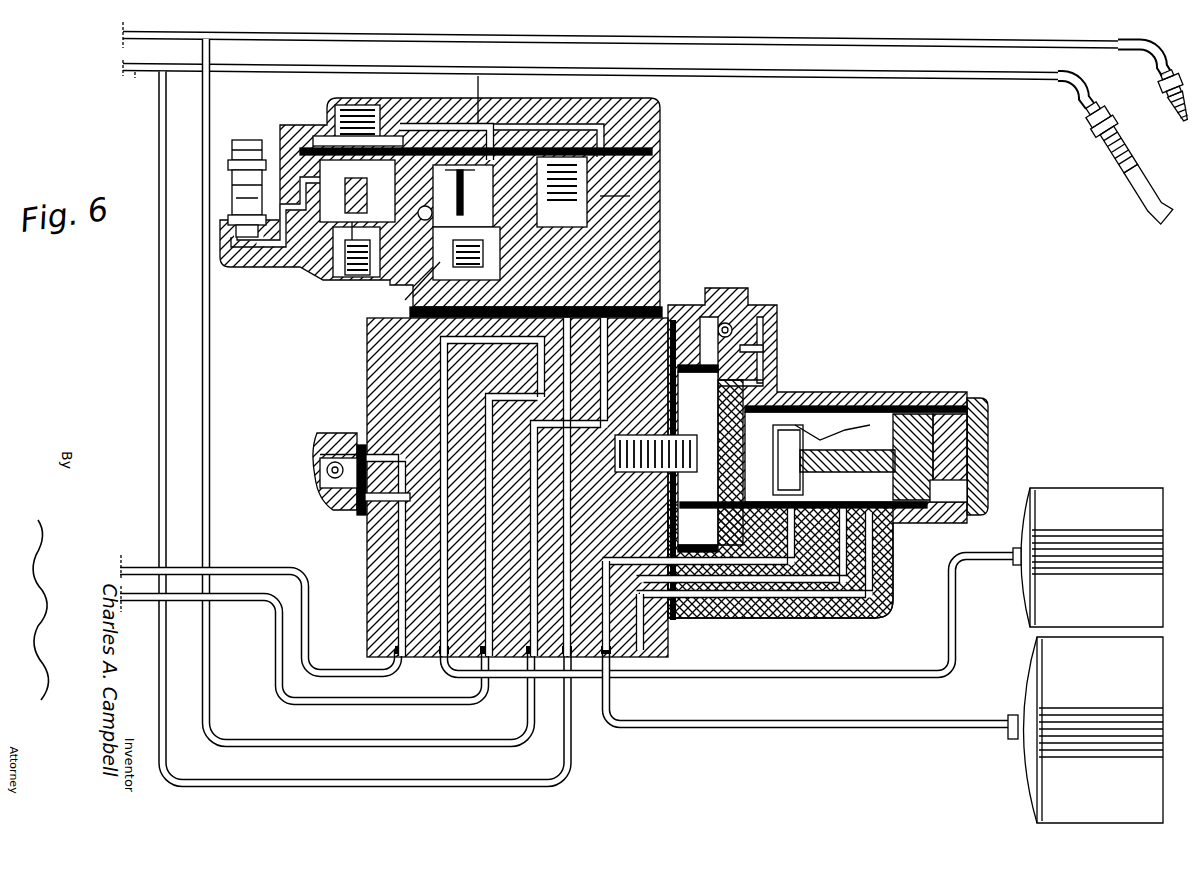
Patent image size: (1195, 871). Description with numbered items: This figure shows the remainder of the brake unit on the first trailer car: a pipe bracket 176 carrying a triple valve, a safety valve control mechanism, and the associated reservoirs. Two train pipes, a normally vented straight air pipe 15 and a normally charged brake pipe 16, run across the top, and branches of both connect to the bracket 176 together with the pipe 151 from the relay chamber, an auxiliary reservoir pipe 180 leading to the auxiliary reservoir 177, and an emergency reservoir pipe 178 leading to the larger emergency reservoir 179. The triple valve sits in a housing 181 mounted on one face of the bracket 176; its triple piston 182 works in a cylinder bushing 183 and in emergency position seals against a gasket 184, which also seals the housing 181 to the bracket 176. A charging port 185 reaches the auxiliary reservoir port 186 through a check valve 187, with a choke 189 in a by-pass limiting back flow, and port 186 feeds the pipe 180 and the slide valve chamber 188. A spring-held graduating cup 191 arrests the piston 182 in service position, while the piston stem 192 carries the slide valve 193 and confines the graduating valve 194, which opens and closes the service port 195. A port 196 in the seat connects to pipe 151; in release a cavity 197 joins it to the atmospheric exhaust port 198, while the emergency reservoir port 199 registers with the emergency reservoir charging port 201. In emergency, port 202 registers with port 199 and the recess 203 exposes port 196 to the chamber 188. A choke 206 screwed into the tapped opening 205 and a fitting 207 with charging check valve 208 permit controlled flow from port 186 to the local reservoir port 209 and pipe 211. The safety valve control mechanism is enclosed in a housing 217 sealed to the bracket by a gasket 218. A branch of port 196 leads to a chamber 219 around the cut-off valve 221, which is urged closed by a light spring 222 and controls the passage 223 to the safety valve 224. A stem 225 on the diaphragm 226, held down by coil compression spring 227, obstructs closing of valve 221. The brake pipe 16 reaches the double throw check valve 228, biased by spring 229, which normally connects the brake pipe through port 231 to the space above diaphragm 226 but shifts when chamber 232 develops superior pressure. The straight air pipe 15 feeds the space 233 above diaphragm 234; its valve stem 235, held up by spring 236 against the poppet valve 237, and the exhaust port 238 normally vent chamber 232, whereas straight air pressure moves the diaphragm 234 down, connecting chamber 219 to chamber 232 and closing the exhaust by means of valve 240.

The straight air pipe 15 is at (165, 26).
The brake pipe 16 is at (136, 73).
The pipe 151 is at (129, 601).
The pipe bracket 176 is at (367, 388).
The auxiliary reservoir 177 is at (1079, 488).
The emergency reservoir pipe 178 is at (718, 727).
The emergency reservoir 179 is at (1022, 667).
The auxiliary reservoir pipe 180 is at (756, 675).
The housing 181 is at (840, 392).
The triple piston 182 is at (698, 455).
The cylinder bushing 183 is at (806, 387).
The gasket 184 is at (676, 521).
The charging port 185 is at (760, 352).
The auxiliary reservoir port 186 is at (676, 306).
The check valve 187 is at (727, 300).
The slide valve chamber 188 is at (887, 406).
The choke 189 is at (765, 332).
The graduating cup 191 is at (697, 440).
The stem 192 is at (922, 400).
The slide valve 193 is at (975, 450).
The graduating valve 194 is at (890, 455).
The service port 195 is at (872, 478).
The port 196 is at (895, 525).
The cavity 197 is at (882, 538).
The atmospheric exhaust port 198 is at (862, 570).
The emergency reservoir port 199 is at (775, 566).
The emergency reservoir charging port 201 is at (797, 458).
The emergency reservoir port 202 is at (732, 490).
The recess 203 is at (970, 485).
The tapped opening 205 is at (368, 530).
The choke 206 is at (360, 512).
The fitting 207 is at (318, 488).
The charging check valve 208 is at (326, 470).
The local reservoir port 209 is at (380, 612).
The pipe 211 is at (272, 567).
The housing 217 is at (661, 172).
The gasket 218 is at (660, 275).
The chamber 219 is at (376, 192).
The cut-off valve 221 is at (343, 258).
The spring 222 is at (362, 272).
The passage 223 is at (261, 258).
The safety valve 224 is at (245, 136).
The stem 225 is at (306, 262).
The flexible diaphragm 226 is at (318, 136).
The coil compression spring 227 is at (372, 96).
The double throw check valve 228 is at (601, 196).
The coil compression spring 229 is at (570, 160).
The port 231 is at (522, 118).
The chamber 232 is at (476, 193).
The space 233 is at (430, 150).
The flexible diaphragm 234 is at (442, 148).
The valve stem 235 is at (489, 122).
The coiled compression spring 236 is at (465, 275).
The poppet valve 237 is at (424, 270).
The exhaust port 238 is at (398, 300).
The valve 240 is at (481, 60).